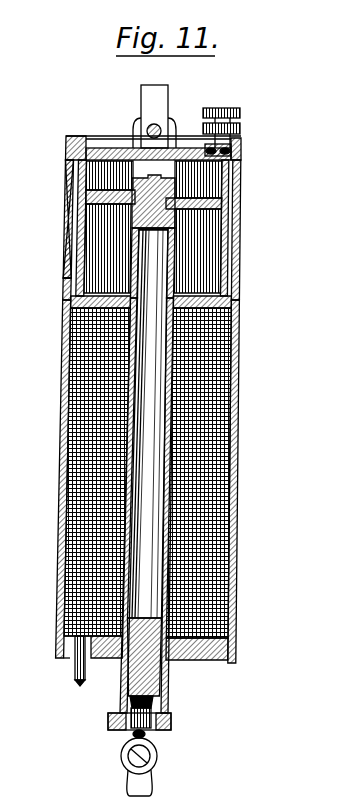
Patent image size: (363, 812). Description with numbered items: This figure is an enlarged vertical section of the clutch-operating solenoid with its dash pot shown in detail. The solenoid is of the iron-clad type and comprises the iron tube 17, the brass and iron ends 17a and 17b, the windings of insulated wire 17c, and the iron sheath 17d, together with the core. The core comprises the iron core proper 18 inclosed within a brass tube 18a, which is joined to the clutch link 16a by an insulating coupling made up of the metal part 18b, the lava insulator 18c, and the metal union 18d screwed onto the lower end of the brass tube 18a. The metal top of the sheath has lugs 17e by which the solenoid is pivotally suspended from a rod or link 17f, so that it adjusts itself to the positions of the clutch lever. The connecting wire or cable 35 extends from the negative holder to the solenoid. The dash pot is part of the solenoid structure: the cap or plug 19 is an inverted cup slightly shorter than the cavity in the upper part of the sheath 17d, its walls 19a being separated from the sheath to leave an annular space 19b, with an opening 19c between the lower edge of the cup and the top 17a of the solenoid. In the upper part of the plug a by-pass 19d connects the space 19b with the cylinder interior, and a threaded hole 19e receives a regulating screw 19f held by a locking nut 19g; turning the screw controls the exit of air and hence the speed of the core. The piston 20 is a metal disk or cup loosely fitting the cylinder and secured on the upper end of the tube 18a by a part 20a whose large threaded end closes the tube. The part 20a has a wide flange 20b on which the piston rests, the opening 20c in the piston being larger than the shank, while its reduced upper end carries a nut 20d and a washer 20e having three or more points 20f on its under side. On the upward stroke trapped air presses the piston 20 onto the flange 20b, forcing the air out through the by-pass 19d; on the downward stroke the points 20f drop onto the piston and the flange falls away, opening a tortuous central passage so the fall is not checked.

The eye ring of connecting link 16a is at (127, 770).
The iron tube 17 is at (167, 488).
The solenoid end (top) 17a is at (227, 295).
The solenoid end (bottom) 17b is at (193, 647).
The windings of insulated wire 17c is at (200, 405).
The iron sheath 17d is at (227, 340).
The lugs 17e is at (128, 118).
The rod or link 17f is at (158, 88).
The iron core 18 is at (128, 590).
The brass tube 18a is at (161, 252).
The metal part 18b is at (138, 727).
The lava insulator 18c is at (160, 722).
The metal union 18d is at (158, 712).
The cap or plug 19 is at (90, 130).
The walls of the cup 19a is at (70, 213).
The annular space 19b is at (60, 232).
The opening 19c is at (55, 293).
The by-pass 19d is at (200, 143).
The threaded hole 19e is at (233, 141).
The regulating screw 19f is at (233, 118).
The locking nut 19g is at (228, 100).
The piston 20 is at (77, 161).
The part having threaded end 20a is at (164, 212).
The flange 20b is at (187, 198).
The opening in the piston 20c is at (126, 207).
The nut 20d is at (126, 168).
The washer 20e is at (185, 185).
The points 20f is at (100, 188).
The connecting wire or cable 35 is at (67, 660).